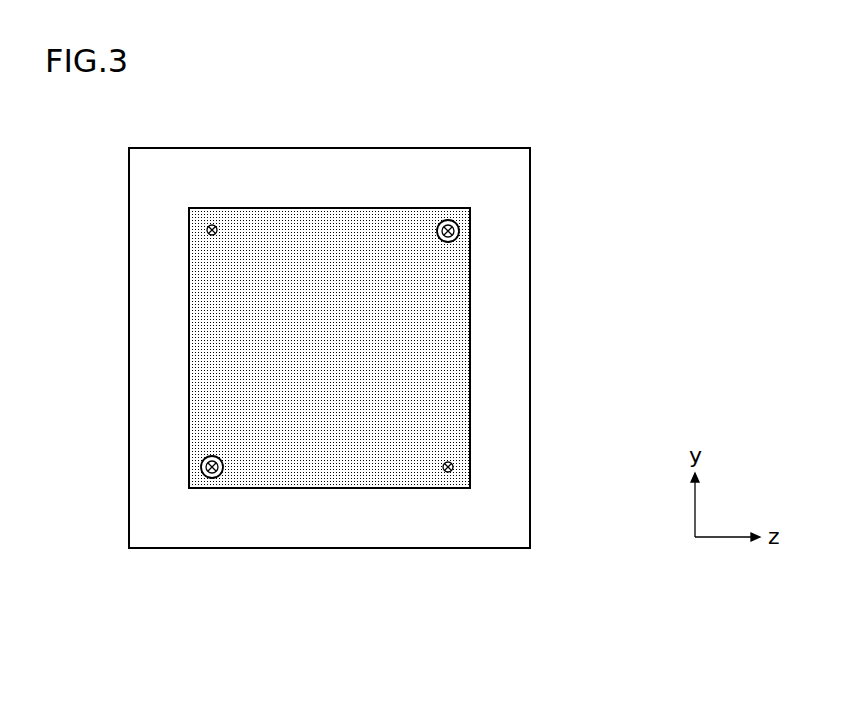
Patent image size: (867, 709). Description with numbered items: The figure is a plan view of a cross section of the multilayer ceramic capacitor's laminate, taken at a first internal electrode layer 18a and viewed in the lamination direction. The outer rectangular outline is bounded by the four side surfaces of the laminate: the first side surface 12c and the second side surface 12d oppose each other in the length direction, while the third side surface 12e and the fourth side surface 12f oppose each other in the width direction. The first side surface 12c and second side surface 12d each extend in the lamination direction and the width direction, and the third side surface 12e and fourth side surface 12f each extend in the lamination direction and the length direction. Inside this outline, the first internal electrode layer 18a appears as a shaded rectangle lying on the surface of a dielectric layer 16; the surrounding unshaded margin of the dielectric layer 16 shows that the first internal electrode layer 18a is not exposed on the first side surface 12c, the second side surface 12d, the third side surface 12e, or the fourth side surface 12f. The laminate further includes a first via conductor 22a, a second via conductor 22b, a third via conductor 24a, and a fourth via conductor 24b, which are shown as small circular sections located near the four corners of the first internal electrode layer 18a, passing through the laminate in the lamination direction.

The first side surface 12c is at (421, 147).
The second side surface 12d is at (422, 549).
The third side surface 12e is at (129, 296).
The fourth side surface 12f is at (530, 400).
The dielectric layer 16 is at (168, 353).
The first internal electrode layer 18a is at (432, 341).
The first via conductor 22a is at (207, 229).
The second via conductor 22b is at (455, 467).
The third via conductor 24a is at (459, 230).
The fourth via conductor 24b is at (201, 468).